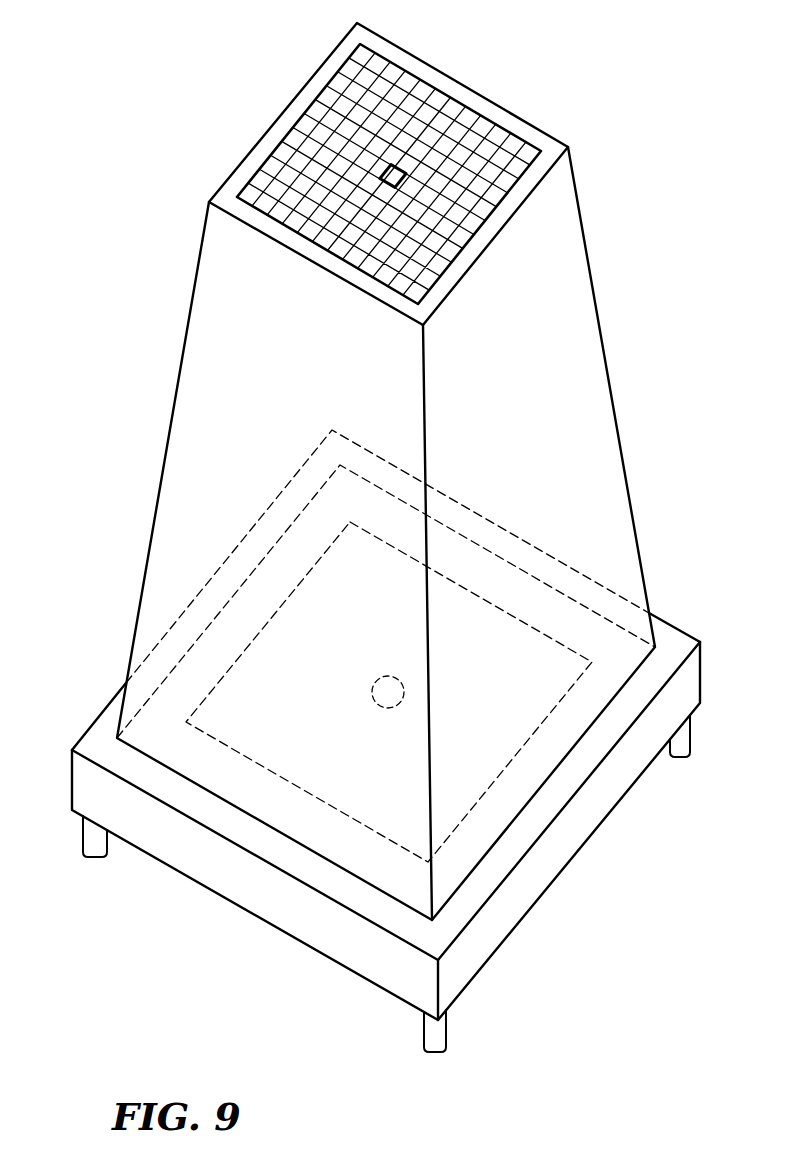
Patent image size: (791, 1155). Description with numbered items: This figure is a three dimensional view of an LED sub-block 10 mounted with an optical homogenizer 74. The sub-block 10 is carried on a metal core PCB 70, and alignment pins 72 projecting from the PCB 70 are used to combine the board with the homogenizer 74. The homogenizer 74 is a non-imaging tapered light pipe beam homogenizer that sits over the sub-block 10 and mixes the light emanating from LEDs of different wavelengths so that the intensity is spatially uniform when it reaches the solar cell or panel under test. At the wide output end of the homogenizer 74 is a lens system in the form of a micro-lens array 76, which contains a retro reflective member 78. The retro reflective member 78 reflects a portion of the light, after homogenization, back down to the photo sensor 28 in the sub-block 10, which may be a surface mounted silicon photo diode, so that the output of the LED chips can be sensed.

The sub-block 10 is at (218, 705).
The photo sensor 28 is at (383, 678).
The metal core PCB 70 is at (238, 904).
The alignment pins 72 is at (92, 860).
The homogenizer 74 is at (200, 253).
The micro-lens array 76 is at (388, 104).
The retro reflective member 78 is at (393, 175).